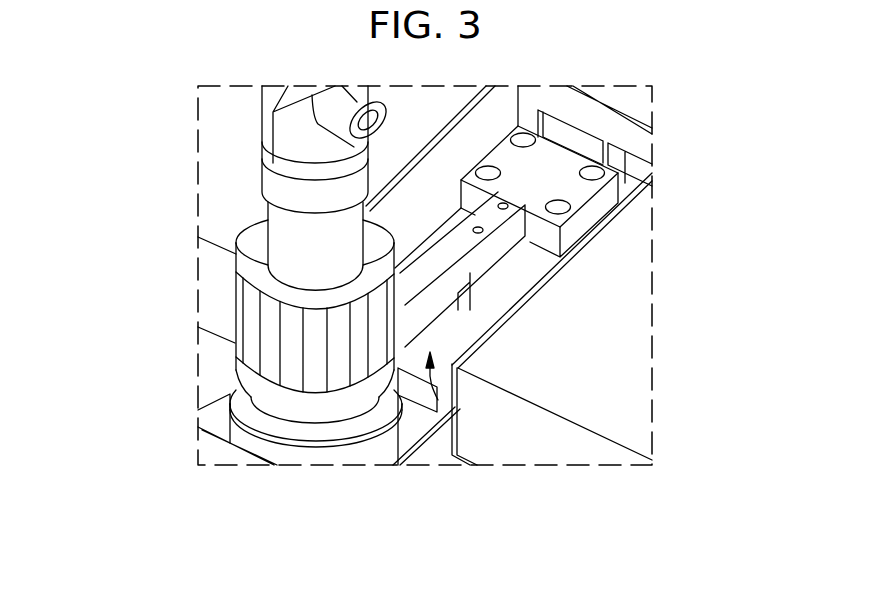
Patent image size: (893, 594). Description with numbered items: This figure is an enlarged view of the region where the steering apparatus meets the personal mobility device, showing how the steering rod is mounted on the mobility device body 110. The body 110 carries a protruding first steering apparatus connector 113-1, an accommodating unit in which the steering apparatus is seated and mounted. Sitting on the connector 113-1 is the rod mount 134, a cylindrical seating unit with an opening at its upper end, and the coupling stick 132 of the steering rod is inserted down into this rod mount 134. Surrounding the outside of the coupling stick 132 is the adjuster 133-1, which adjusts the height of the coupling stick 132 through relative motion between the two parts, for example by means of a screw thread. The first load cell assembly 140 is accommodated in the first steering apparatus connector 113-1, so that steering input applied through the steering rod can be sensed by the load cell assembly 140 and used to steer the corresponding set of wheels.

The mobility device body 110 is at (603, 355).
The first steering apparatus connector 113-1 is at (417, 431).
The coupling stick 132 is at (328, 412).
The adjuster 133-1 is at (270, 337).
The rod mount 134 is at (265, 444).
The first load cell assembly 140 is at (438, 400).